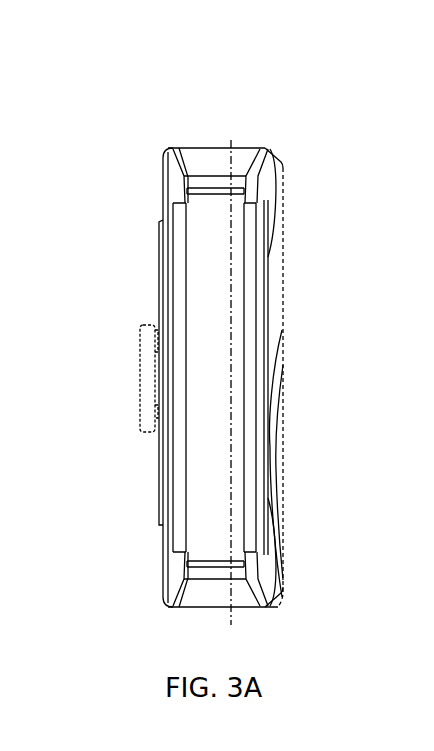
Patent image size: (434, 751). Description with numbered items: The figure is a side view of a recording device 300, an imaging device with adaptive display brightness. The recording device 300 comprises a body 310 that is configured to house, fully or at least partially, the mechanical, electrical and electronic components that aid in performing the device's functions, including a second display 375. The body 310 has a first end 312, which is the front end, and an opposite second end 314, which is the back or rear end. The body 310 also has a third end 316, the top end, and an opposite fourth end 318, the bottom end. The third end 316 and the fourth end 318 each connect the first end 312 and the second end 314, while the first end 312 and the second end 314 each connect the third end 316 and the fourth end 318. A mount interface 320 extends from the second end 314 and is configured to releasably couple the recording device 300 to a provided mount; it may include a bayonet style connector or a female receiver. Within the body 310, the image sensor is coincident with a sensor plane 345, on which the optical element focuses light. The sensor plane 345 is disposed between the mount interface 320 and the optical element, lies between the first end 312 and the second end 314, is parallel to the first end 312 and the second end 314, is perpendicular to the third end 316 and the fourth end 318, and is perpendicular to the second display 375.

The recording device 300 is at (112, 92).
The second display 375 is at (198, 140).
The fourth end 318 is at (239, 140).
The body 310 is at (265, 150).
The first end 312 is at (290, 266).
The second end 314 is at (156, 563).
The mount interface 320 is at (140, 327).
The third end 316 is at (201, 619).
The sensor plane 345 is at (233, 613).